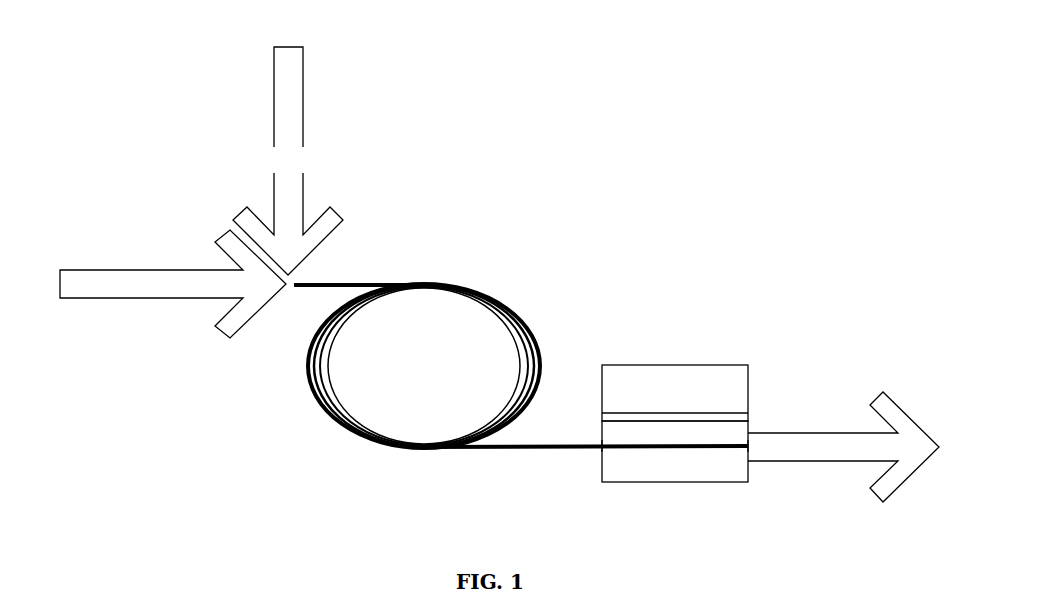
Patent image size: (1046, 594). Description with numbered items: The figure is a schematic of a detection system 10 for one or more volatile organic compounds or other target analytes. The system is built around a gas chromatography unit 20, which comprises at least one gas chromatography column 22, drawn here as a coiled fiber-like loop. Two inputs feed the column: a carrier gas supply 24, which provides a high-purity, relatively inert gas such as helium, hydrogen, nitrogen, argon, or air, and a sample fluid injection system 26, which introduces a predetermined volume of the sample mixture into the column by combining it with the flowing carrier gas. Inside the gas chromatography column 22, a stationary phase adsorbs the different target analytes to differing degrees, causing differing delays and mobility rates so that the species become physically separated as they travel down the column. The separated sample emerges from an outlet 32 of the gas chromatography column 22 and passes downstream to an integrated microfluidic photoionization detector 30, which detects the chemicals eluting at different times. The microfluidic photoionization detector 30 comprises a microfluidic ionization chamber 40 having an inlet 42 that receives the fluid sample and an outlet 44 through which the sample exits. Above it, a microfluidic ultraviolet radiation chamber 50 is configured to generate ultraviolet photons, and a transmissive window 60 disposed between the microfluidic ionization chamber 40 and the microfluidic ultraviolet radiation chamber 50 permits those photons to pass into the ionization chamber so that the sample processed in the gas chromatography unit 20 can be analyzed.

The detection system 10 is at (148, 40).
The gas chromatography unit 20 is at (220, 168).
The gas chromatography column 22 is at (453, 285).
The carrier gas supply 24 is at (173, 284).
The sample fluid injection system 26 is at (288, 161).
The microfluidic photoionization detector 30 is at (641, 297).
The outlet 32 is at (490, 449).
The microfluidic ionization chamber 40 is at (662, 457).
The inlet 42 is at (598, 449).
The outlet 44 is at (752, 451).
The microfluidic ultraviolet radiation chamber 50 is at (680, 380).
The transmissive window 60 is at (750, 413).